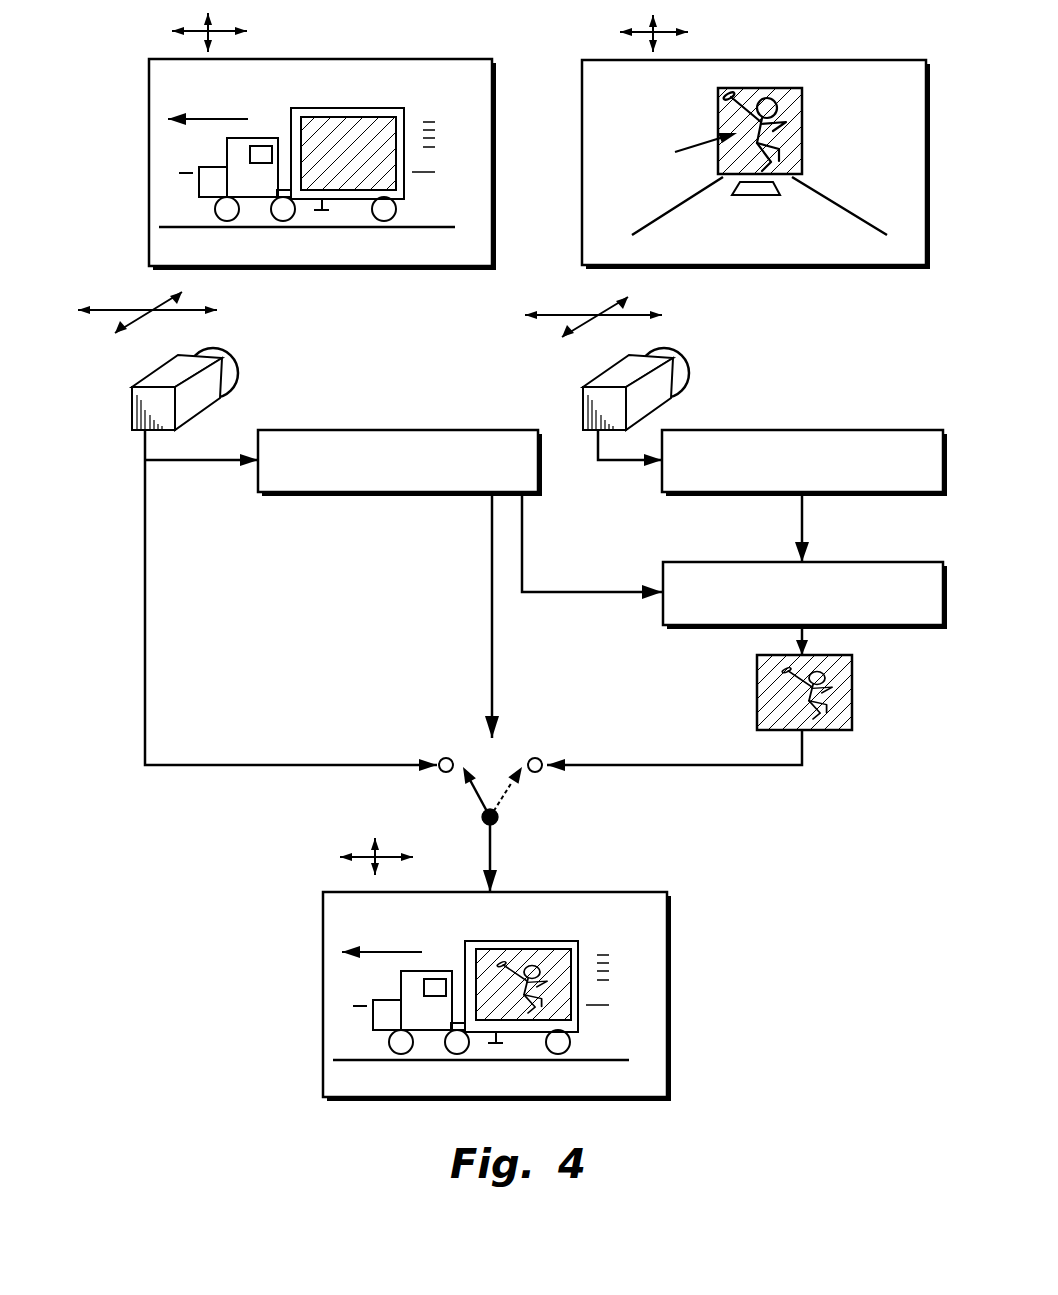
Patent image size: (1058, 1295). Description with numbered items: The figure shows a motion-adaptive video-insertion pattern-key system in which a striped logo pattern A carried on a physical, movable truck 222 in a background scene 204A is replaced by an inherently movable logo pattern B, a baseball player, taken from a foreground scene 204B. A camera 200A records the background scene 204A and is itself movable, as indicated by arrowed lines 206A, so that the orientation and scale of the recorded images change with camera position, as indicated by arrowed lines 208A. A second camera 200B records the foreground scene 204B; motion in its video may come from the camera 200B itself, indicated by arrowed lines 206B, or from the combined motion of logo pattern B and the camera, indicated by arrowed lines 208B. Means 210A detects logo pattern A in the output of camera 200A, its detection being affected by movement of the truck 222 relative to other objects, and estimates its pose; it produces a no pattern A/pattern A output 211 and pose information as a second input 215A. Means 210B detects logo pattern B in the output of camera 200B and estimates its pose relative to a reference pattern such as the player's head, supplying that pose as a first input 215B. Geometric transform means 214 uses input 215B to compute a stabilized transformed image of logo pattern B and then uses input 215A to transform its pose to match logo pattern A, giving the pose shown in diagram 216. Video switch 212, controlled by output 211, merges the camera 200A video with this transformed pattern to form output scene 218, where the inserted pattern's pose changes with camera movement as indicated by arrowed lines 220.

The camera 200A is at (237, 370).
The camera 200B is at (683, 370).
The background scene 204A is at (365, 268).
The foreground scene 204B is at (798, 270).
The arrowed lines 206A is at (153, 310).
The arrowed lines 206B is at (603, 313).
The arrowed lines 208A is at (223, 32).
The arrowed lines 208B is at (667, 32).
The means for detecting and estimating pose 210A is at (258, 478).
The means for detecting and estimating pose 210B is at (662, 473).
The no pattern A/pattern A output 211 is at (490, 618).
The video switch 212 is at (472, 790).
The geometric transform means 214 is at (900, 627).
The second input 215A is at (550, 592).
The first input 215B is at (803, 515).
The diagram 216 is at (756, 682).
The output scene 218 is at (670, 963).
The arrowed lines 220 is at (370, 857).
The truck 222 is at (320, 108).